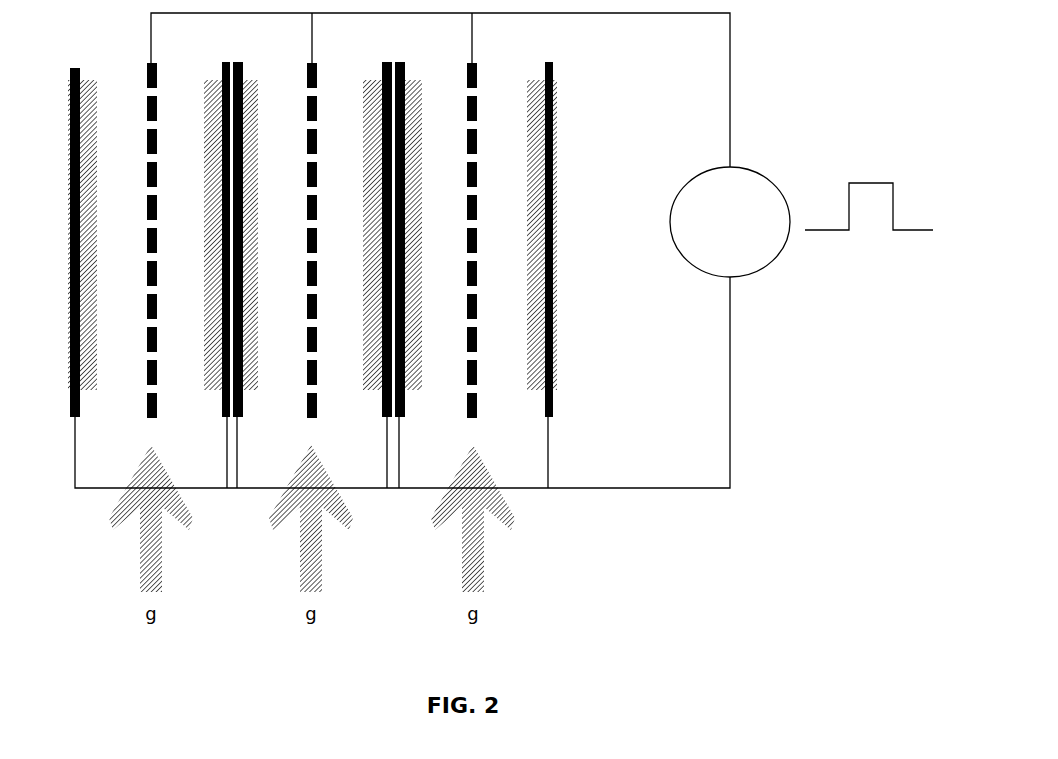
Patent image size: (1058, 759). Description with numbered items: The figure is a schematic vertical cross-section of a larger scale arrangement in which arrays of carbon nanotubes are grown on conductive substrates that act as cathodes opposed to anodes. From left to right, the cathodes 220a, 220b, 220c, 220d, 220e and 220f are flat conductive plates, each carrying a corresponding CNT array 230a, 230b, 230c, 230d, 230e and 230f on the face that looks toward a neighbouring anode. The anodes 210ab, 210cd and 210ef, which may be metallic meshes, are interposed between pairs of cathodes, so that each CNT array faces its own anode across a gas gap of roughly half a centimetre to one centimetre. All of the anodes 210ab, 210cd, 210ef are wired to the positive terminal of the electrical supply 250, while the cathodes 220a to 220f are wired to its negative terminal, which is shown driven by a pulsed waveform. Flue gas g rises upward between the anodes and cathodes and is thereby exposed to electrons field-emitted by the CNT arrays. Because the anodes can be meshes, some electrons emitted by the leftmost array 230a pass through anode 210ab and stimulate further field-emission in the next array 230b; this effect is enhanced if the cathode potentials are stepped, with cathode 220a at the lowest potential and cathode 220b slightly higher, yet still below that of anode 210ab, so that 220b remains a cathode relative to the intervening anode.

The cathode 220a is at (72, 89).
The cathode 220b is at (218, 72).
The cathode 220c is at (238, 75).
The cathode 220d is at (382, 72).
The cathode 220e is at (403, 75).
The cathode 220f is at (553, 93).
The CNT array 230a is at (97, 188).
The CNT array 230b is at (205, 265).
The CNT array 230c is at (255, 173).
The CNT array 230d is at (368, 277).
The CNT array 230e is at (420, 190).
The CNT array 230f is at (530, 277).
The anode 210ab is at (153, 377).
The anode 210cd is at (313, 372).
The anode 210ef is at (477, 372).
The electrical supply 250 is at (748, 172).